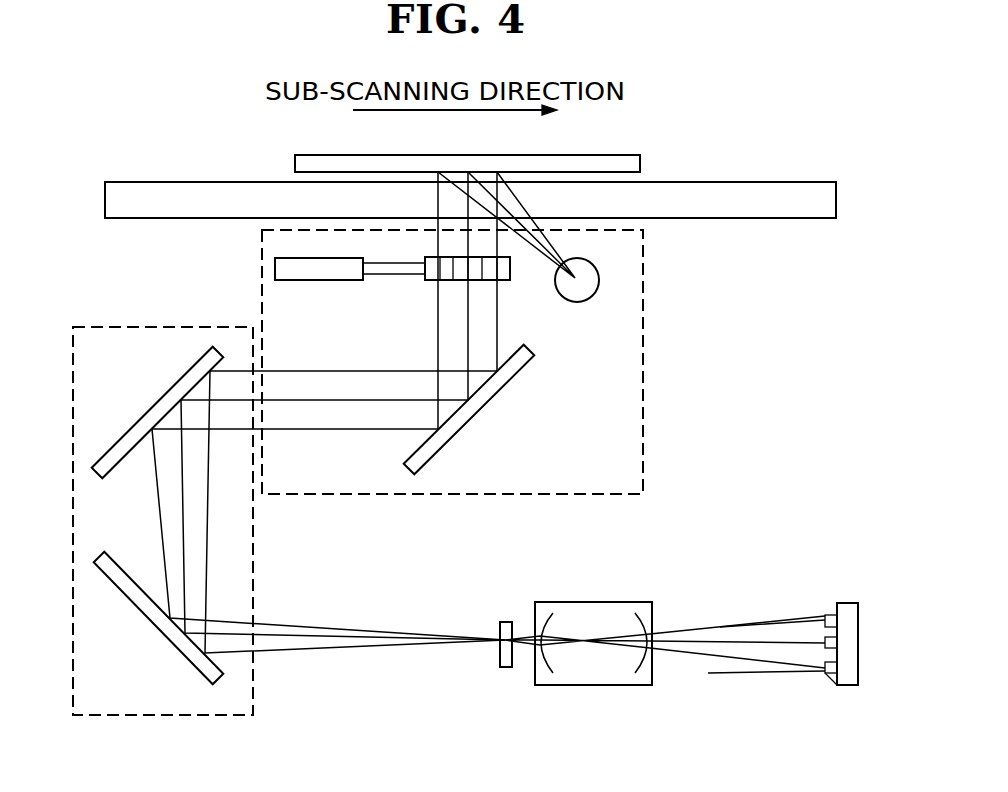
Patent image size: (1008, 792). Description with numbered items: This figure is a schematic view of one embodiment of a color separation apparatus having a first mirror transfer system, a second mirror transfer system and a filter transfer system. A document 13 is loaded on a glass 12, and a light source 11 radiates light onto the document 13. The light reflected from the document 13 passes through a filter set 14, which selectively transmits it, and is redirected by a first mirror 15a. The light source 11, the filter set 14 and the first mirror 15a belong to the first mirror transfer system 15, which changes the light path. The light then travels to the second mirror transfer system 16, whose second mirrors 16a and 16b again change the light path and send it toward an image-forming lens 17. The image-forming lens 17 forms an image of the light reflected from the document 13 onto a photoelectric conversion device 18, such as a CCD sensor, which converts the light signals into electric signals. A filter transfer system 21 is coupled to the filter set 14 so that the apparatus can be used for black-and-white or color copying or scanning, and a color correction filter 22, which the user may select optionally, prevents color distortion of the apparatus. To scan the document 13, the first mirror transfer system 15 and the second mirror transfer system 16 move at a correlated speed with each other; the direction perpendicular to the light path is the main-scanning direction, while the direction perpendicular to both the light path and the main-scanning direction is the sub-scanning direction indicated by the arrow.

The light source 11 is at (596, 285).
The glass 12 is at (836, 192).
The document 13 is at (640, 155).
The filter set 14 is at (510, 282).
The first mirror transfer system 15 is at (643, 438).
The first mirror 15a is at (488, 394).
The second mirror transfer system 16 is at (253, 698).
The second mirror 16a is at (185, 390).
The second mirror 16b is at (110, 585).
The image-forming lens 17 is at (610, 602).
The photoelectric conversion device 18 is at (839, 602).
The filter transfer system 21 is at (323, 280).
The color correction filter 22 is at (504, 620).